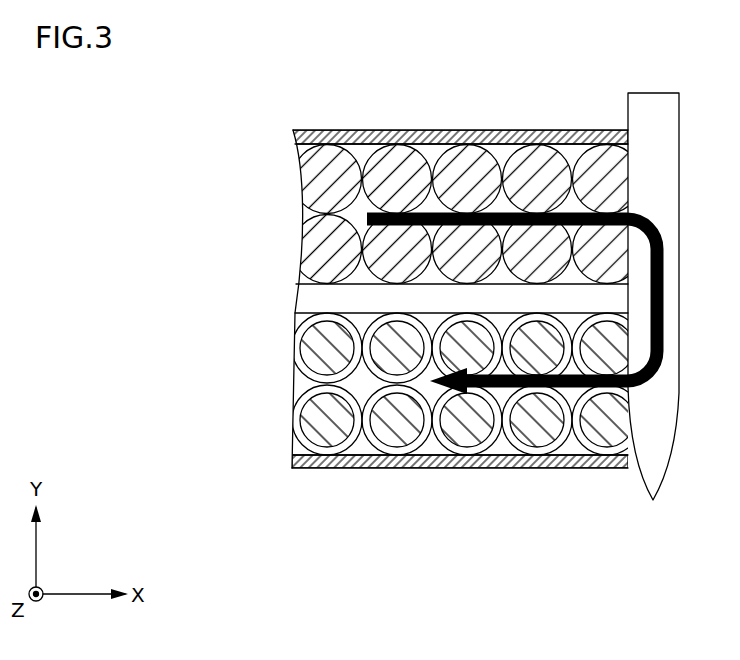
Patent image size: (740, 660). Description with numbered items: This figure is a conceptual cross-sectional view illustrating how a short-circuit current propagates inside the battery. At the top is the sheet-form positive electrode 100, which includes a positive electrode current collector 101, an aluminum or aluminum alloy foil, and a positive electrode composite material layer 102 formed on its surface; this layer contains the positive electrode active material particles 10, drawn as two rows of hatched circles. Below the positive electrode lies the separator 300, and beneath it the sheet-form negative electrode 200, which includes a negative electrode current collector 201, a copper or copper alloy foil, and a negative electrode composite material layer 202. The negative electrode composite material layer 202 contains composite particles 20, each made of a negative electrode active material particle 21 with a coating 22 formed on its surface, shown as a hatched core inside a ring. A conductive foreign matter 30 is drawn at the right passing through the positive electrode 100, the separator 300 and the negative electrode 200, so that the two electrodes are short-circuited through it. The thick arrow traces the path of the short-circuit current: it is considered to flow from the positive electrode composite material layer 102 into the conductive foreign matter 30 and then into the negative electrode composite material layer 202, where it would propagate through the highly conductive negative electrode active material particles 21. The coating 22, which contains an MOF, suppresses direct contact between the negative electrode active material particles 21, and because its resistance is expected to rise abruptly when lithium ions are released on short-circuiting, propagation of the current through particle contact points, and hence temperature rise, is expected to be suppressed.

The positive electrode 100 is at (156, 130).
The positive electrode current collector 101 is at (313, 130).
The positive electrode composite material layer 102 is at (208, 150).
The positive electrode active material particles 10 is at (313, 188).
The separator 300 is at (312, 299).
The negative electrode 200 is at (156, 322).
The negative electrode current collector 201 is at (314, 468).
The negative electrode composite material layer 202 is at (208, 313).
The composite particles 20 is at (241, 328).
The negative electrode active material particle 21 is at (313, 345).
The coating 22 is at (302, 372).
The conductive foreign matter 30 is at (655, 93).